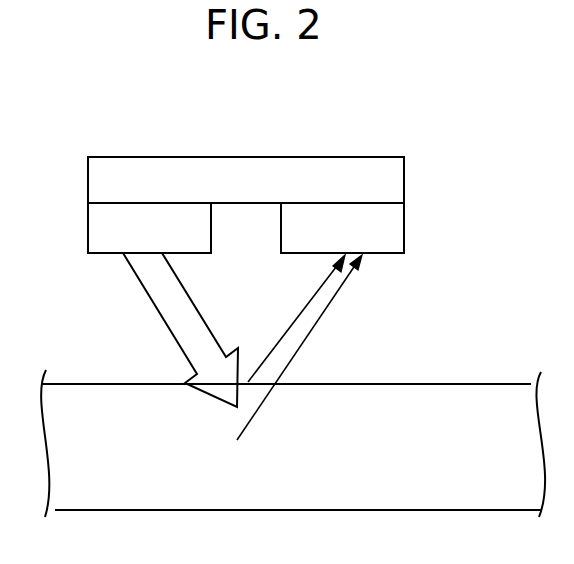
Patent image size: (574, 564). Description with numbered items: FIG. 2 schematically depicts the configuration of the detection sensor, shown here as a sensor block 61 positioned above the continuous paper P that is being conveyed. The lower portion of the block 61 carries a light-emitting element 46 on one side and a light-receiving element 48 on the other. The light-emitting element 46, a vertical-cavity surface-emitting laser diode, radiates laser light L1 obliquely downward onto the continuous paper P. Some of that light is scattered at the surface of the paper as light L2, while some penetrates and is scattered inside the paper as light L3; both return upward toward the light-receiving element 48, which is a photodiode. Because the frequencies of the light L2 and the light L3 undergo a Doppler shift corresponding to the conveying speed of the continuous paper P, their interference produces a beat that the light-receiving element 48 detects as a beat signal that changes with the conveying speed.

The sensor unit 61 is at (377, 157).
The light-emitting element 46 is at (92, 226).
The light-receiving element 48 is at (395, 230).
The light L1 is at (160, 322).
The light scattered at the surface L2 is at (275, 347).
The light scattered inside L3 is at (287, 365).
The continuous paper P is at (474, 388).